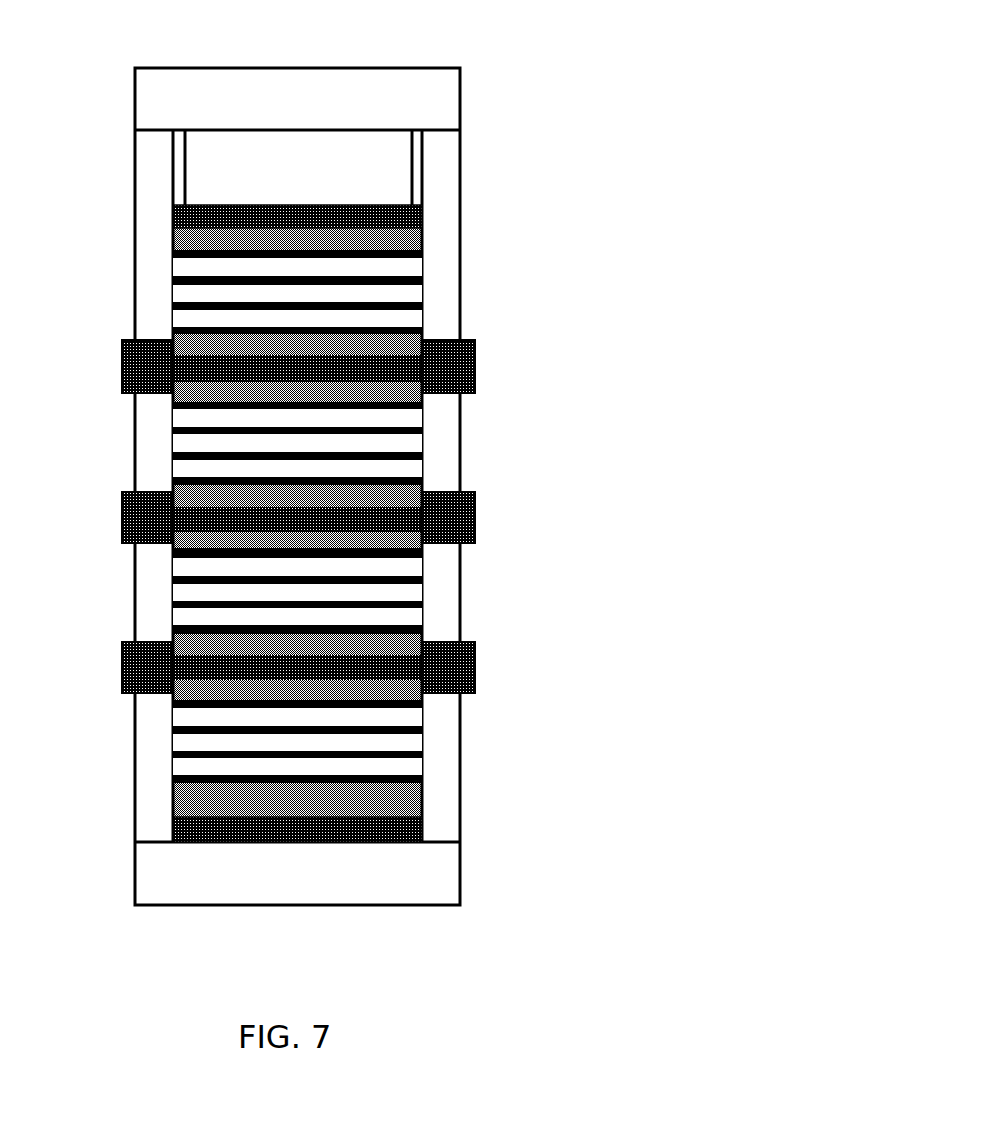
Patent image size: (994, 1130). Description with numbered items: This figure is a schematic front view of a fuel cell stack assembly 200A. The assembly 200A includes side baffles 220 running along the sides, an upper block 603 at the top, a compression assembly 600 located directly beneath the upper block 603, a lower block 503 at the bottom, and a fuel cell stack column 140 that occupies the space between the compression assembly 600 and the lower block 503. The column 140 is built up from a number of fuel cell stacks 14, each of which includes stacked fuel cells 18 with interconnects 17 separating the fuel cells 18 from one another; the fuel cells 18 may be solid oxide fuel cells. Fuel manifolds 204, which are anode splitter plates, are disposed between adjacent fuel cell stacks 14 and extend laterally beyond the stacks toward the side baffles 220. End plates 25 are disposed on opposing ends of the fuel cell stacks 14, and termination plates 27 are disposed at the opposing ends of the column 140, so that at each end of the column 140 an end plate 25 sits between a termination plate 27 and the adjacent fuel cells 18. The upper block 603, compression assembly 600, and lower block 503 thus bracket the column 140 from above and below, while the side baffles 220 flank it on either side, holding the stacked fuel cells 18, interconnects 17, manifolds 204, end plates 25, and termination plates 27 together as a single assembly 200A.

The fuel cell stack assembly 200A is at (481, 93).
The upper block 603 is at (331, 117).
The compression assembly 600 is at (331, 180).
The lower block 503 is at (319, 891).
The fuel cell stack column 140 is at (497, 486).
The termination plate 27 is at (422, 217).
The end plate 25 is at (422, 242).
The fuel cell stack 14 is at (438, 290).
The interconnect 17 is at (410, 417).
The fuel cell 18 is at (419, 484).
The side baffle 220 is at (134, 330).
The fuel manifold 204 is at (475, 667).